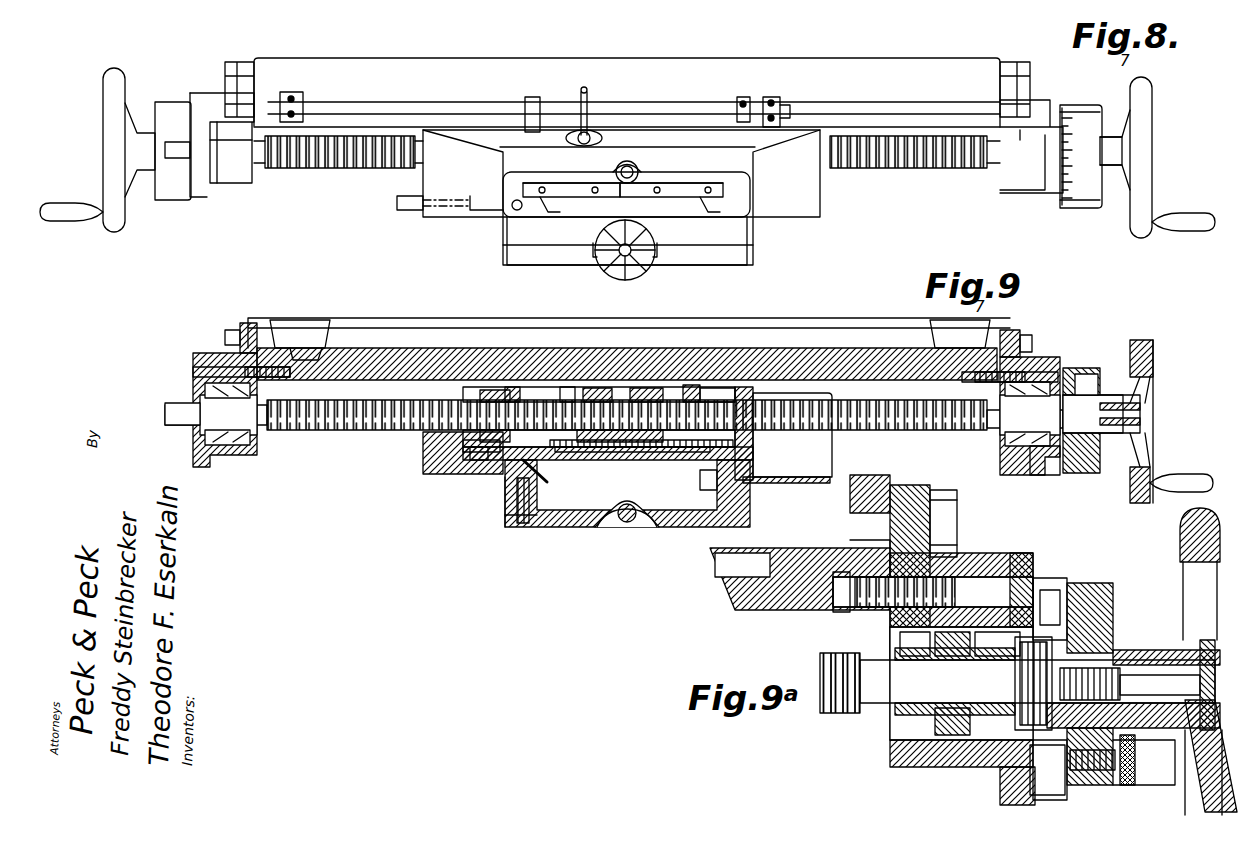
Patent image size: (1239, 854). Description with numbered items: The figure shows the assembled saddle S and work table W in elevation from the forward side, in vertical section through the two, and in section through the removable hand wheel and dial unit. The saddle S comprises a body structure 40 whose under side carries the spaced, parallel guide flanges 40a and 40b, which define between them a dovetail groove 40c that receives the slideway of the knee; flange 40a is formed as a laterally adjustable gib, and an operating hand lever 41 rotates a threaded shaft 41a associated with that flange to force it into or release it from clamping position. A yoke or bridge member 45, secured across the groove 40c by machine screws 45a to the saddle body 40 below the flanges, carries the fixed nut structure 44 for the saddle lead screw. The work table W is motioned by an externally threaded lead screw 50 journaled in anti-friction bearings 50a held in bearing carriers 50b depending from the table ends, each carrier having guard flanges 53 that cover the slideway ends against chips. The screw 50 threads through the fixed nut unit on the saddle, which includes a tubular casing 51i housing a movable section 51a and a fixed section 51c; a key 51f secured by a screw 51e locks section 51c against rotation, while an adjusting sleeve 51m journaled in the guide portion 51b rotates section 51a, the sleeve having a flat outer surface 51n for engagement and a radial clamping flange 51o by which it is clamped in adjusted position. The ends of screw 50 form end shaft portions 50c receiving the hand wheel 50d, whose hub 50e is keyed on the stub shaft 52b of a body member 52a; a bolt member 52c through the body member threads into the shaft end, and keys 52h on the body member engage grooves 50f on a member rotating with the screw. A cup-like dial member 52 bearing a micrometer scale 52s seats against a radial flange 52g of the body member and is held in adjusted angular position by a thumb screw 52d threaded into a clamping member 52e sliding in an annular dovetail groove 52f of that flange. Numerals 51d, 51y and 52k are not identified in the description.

In FIG. 8, the work table W is at (440, 75).
In FIG. 9, the work table W is at (758, 327).
In FIG. 8, the saddle S is at (508, 238).
In FIG. 9, the saddle S is at (500, 478).
In FIG. 8, the body structure 40 is at (748, 215).
In FIG. 9, the body structure 40 is at (750, 487).
In FIG. 8, the guide flange 40a is at (571, 202).
In FIG. 9, the guide flange 40a is at (554, 478).
In FIG. 8, the guide flange 40b is at (671, 202).
In FIG. 9, the guide flange 40b is at (708, 485).
In FIG. 8, the dovetail groove 40c is at (634, 197).
In FIG. 9, the dovetail groove 40c is at (660, 455).
In FIG. 8, the operating hand lever 41 is at (397, 203).
In FIG. 8, the threaded shaft 41a is at (420, 210).
In FIG. 8, the fixed nut structure 44 is at (600, 265).
In FIG. 9, the fixed nut structure 44 is at (595, 528).
In FIG. 8, the yoke or bridge member 45 is at (700, 255).
In FIG. 9, the yoke or bridge member 45 is at (528, 525).
In FIG. 9, the machine screws 45a is at (512, 522).
In FIG. 8, the lead screw 50 is at (852, 168).
In FIG. 9, the lead screw 50 is at (314, 428).
In FIG. 9A, the lead screw 50 is at (833, 655).
In FIG. 9, the anti-friction bearings 50a is at (215, 367).
In FIG. 9A, the anti-friction bearings 50a is at (893, 650).
In FIG. 9, the bearing carriers 50b is at (245, 340).
In FIG. 9A, the bearing carriers 50b is at (970, 577).
In FIG. 9, the end shaft portions 50c is at (195, 378).
In FIG. 9A, the end shaft portions 50c is at (925, 772).
In FIG. 8, the hand wheel 50d is at (1148, 130).
In FIG. 9, the hand wheel 50d is at (1153, 385).
In FIG. 9A, the hand wheel 50d is at (1185, 555).
In FIG. 9, the hub 50e is at (1032, 462).
In FIG. 9A, the hub 50e is at (1070, 625).
In FIG. 9A, the grooves or recesses 50f is at (1015, 578).
In FIG. 9, the movable section 51a is at (598, 388).
In FIG. 9, the guide portion 51b is at (512, 387).
In FIG. 9, the fixed section 51c is at (670, 387).
In FIG. 9, the nut member 51d is at (605, 388).
In FIG. 9, the screw 51e is at (712, 387).
In FIG. 9, the key 51f is at (770, 393).
In FIG. 9, the tubular casing 51i is at (698, 385).
In FIG. 9, the adjusting sleeve 51m is at (606, 406).
In FIG. 9, the flat outer surface 51n is at (395, 478).
In FIG. 9, the radial clamping flange 51o is at (463, 445).
In FIG. 9, the nut member 51y is at (567, 387).
In FIG. 8, the dial member 52 is at (1078, 207).
In FIG. 9, the dial member 52 is at (1080, 372).
In FIG. 9, the body member 52a is at (1100, 370).
In FIG. 9A, the body member 52a is at (1118, 650).
In FIG. 9A, the stub shaft 52b is at (1112, 665).
In FIG. 9A, the bolt member 52c is at (1115, 680).
In FIG. 9A, the thumb screw 52d is at (1135, 765).
In FIG. 9A, the clamping member 52e is at (1100, 795).
In FIG. 9A, the annular groove 52f is at (1116, 650).
In FIG. 9A, the radial flange 52g is at (1080, 583).
In FIG. 9A, the keys 52h is at (1081, 748).
In FIG. 9A, the dial nut 52k is at (1053, 683).
In FIG. 8, the micrometer scale 52s is at (1070, 118).
In FIG. 8, the guard flanges 53 is at (228, 128).